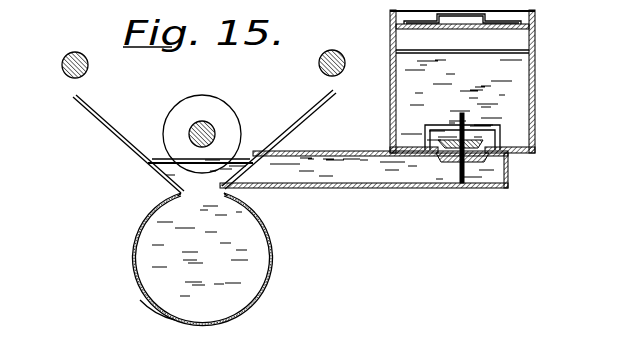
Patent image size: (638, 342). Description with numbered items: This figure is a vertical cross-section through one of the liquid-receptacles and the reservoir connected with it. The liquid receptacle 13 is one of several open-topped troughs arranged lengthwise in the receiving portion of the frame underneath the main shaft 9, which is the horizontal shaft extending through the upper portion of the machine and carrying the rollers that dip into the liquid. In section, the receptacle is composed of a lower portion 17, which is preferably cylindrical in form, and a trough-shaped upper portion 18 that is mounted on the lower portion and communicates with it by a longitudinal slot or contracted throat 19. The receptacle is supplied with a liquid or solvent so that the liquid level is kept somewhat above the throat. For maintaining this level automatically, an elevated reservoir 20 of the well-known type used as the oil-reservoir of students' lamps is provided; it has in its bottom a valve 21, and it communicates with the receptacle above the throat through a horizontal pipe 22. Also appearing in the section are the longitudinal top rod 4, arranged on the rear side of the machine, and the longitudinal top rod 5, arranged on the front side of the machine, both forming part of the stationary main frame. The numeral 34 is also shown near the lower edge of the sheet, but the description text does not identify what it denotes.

The longitudinal top rod 4 is at (350, 50).
The longitudinal top rod 5 is at (61, 64).
The main shaft 9 is at (192, 125).
The liquid receptacle 13 is at (208, 314).
The lower portion 17 is at (171, 314).
The trough-shaped upper portion 18 is at (94, 141).
The contracted throat 19 is at (222, 189).
The elevated reservoir 20 is at (474, 81).
The valve 21 is at (487, 143).
The horizontal pipe 22 is at (328, 161).
The unspecified 34 is at (377, 336).